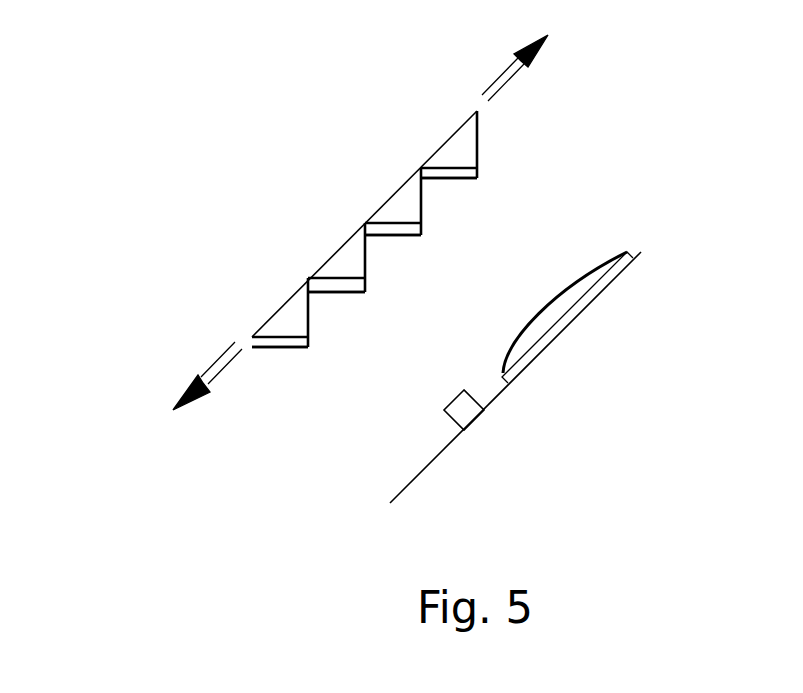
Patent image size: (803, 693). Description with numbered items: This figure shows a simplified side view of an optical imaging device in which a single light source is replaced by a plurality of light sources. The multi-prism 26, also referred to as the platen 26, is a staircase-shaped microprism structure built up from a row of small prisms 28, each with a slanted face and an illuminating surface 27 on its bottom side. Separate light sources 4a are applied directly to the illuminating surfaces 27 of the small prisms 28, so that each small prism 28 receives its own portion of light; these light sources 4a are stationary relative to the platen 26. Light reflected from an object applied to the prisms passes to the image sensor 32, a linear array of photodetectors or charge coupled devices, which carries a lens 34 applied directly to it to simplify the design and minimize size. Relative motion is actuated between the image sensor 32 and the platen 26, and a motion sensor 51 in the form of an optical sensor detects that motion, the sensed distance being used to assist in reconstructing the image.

The multi-prism 26 is at (392, 197).
The illuminating surface 27 is at (397, 208).
The small prism 28 is at (460, 147).
The light source 4a is at (338, 292).
The image sensor 32 is at (592, 297).
The lens 34 is at (584, 282).
The motion sensor 51 is at (470, 418).